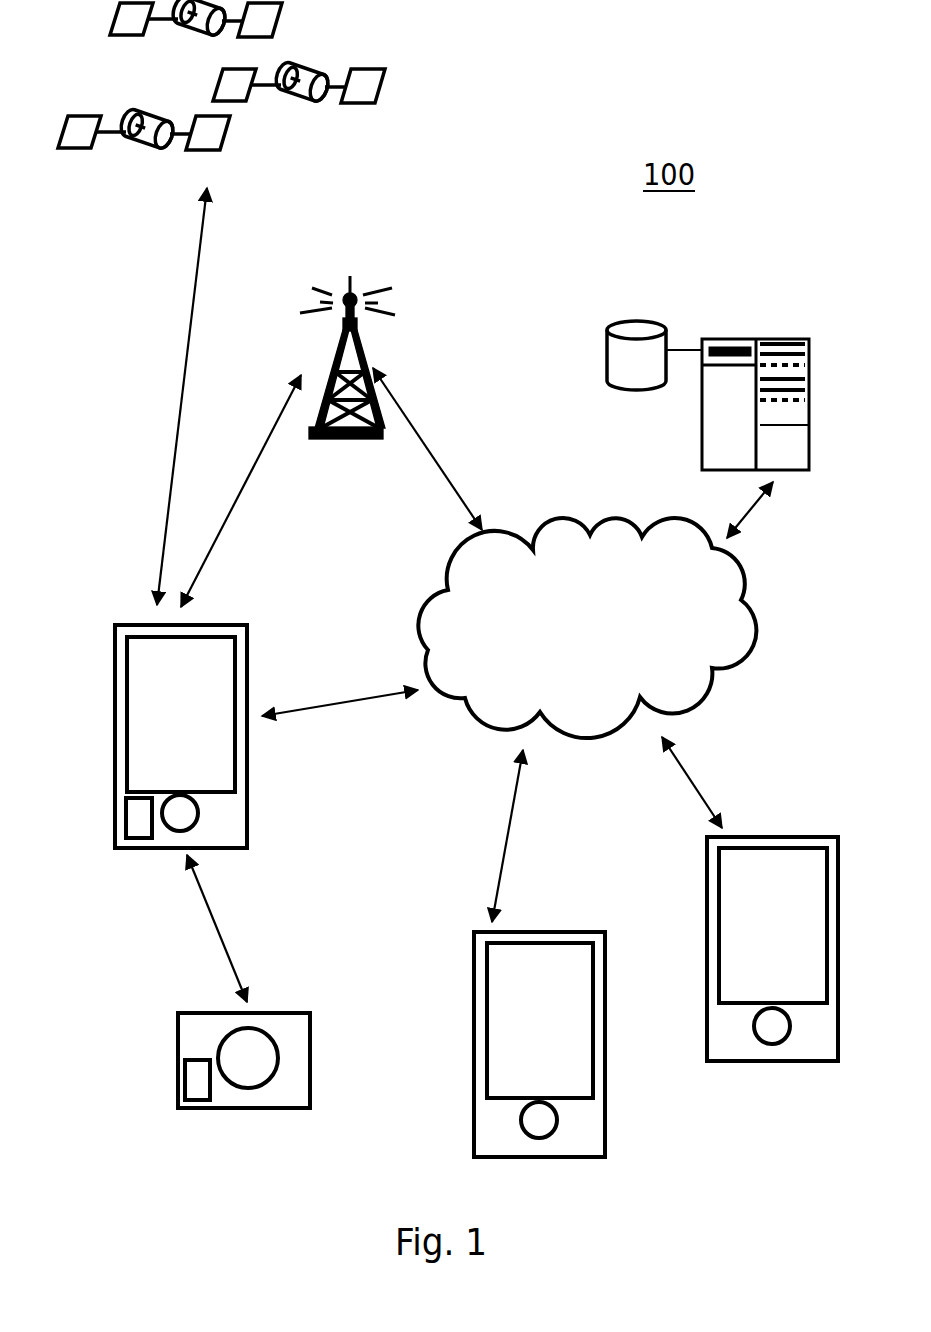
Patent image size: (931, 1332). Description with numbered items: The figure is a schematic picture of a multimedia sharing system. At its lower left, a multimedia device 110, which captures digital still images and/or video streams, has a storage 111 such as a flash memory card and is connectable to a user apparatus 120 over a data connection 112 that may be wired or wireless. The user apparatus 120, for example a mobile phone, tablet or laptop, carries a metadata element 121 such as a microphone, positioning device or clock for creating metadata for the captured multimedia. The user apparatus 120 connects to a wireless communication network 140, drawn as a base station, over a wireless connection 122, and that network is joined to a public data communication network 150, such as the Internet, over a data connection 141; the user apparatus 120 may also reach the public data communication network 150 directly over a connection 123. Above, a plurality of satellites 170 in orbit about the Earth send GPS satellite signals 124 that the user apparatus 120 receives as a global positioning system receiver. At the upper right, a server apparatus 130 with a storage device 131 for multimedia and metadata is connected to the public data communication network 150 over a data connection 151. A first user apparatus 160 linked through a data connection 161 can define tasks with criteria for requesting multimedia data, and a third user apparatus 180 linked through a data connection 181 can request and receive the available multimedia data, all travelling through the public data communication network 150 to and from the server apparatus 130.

The multimedia device 110 is at (310, 1067).
The storage 111 is at (197, 1078).
The data connection 112 is at (213, 928).
The user apparatus 120 is at (247, 778).
The metadata element 121 is at (138, 818).
The wireless connection 122 is at (210, 555).
The connection 123 is at (323, 707).
The GPS satellite signals 124 is at (185, 390).
The server apparatus 130 is at (702, 438).
The storage device 131 is at (607, 356).
The wireless communication network 140 is at (334, 345).
The data connection 141 is at (444, 478).
The public data communication network 150 is at (731, 665).
The data connection 151 is at (754, 512).
The first user apparatus 160 is at (474, 1124).
The data connection 161 is at (507, 835).
The satellites 170 is at (386, 88).
The third user apparatus 180 is at (707, 891).
The data connection 181 is at (692, 788).